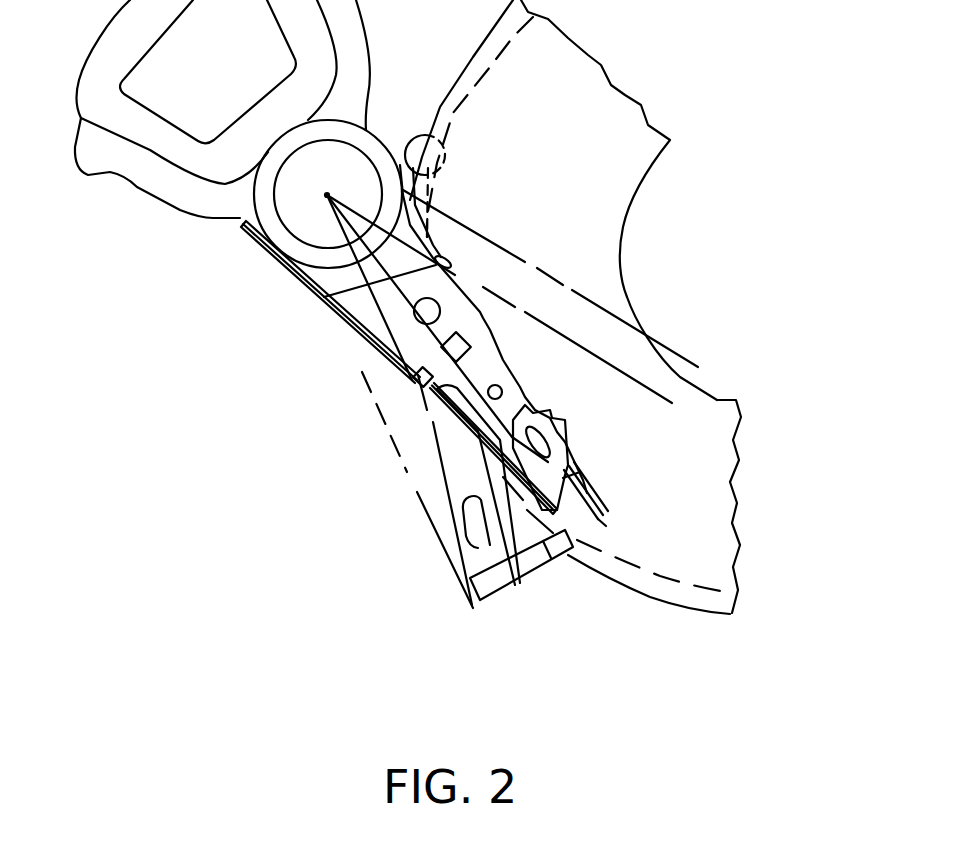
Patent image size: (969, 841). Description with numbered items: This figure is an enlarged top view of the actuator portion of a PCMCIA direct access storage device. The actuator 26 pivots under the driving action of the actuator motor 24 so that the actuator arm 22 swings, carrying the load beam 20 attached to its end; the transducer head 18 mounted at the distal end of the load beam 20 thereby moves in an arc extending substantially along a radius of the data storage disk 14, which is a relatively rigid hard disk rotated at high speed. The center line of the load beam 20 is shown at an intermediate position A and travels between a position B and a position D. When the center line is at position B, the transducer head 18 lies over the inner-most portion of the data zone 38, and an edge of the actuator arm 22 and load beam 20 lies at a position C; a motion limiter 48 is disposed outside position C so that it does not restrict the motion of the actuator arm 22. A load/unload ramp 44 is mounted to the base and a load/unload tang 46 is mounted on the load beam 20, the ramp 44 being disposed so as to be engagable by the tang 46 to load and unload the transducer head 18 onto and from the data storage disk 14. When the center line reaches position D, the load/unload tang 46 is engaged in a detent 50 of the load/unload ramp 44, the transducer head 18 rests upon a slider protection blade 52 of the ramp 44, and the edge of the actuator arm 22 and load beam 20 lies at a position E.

The data storage disk 14 is at (717, 400).
The transducer head 18 is at (587, 482).
The load beam 20 is at (489, 350).
The actuator arm 22 is at (342, 280).
The actuator motor 24 is at (143, 212).
The actuator 26 is at (390, 372).
The data zone 38 is at (583, 115).
The load/unload ramp 44 is at (530, 577).
The load/unload tang 46 is at (605, 510).
The motion limiter 48 is at (420, 137).
The detent 50 is at (512, 587).
The slider protection blade 52 is at (477, 533).